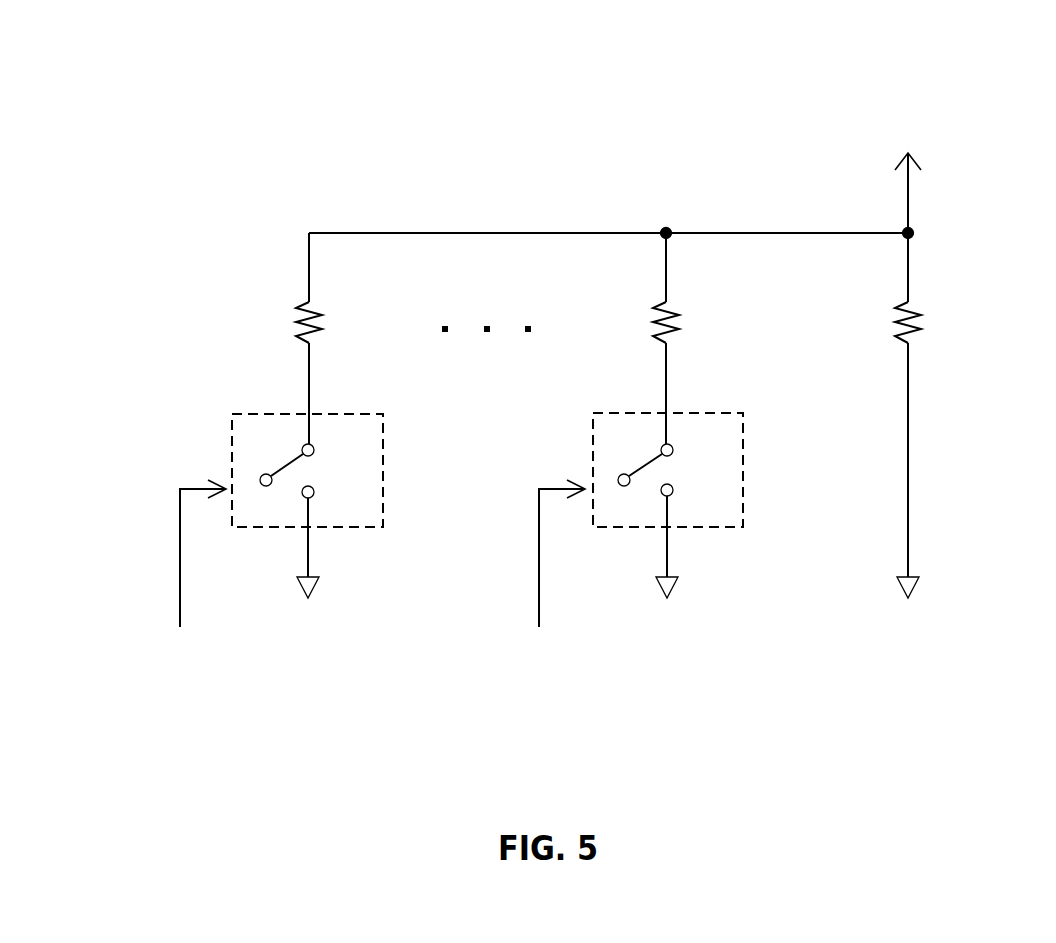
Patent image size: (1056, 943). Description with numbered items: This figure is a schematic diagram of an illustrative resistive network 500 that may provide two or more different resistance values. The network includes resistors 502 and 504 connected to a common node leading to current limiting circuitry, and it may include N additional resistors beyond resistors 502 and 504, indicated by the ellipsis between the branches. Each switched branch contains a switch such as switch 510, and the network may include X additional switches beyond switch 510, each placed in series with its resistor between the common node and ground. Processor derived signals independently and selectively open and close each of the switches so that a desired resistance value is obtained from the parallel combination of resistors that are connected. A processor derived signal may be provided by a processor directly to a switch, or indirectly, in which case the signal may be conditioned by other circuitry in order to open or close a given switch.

The resistive network 500 is at (512, 51).
The resistor 502 is at (930, 326).
The resistor 504 is at (688, 325).
The switch 510 is at (745, 470).
The number of resistors N is at (288, 322).
The number of switches X is at (270, 457).